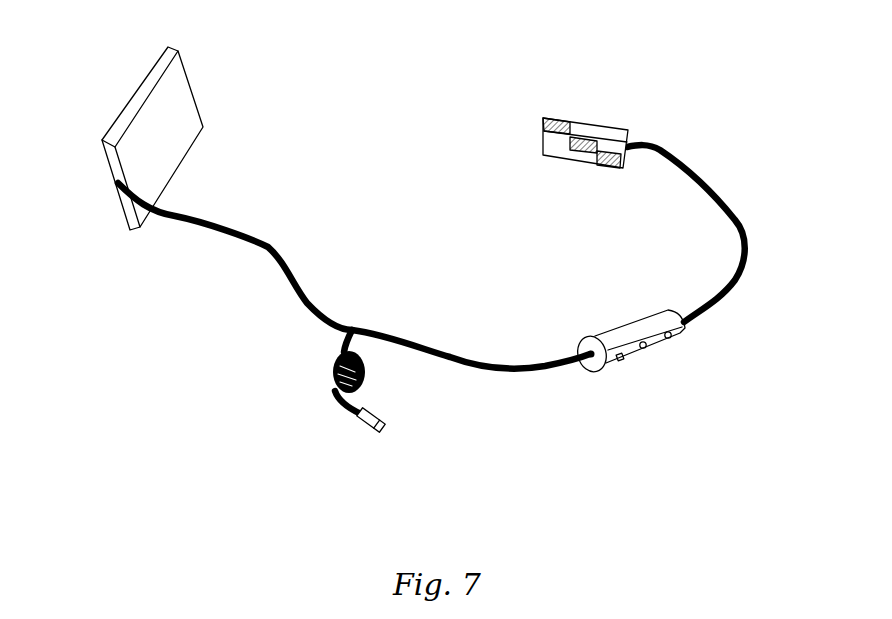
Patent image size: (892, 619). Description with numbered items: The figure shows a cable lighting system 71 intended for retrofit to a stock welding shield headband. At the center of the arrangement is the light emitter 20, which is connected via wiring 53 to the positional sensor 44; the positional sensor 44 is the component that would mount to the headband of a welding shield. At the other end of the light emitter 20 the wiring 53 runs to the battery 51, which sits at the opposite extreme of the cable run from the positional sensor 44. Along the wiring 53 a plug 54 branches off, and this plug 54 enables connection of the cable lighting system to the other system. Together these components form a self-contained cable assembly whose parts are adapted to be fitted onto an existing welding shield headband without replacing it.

The battery 51 is at (112, 117).
The wiring 53 is at (210, 222).
The plug 54 is at (385, 422).
The light emitter 20 is at (630, 362).
The positional sensor 44 is at (588, 123).
The cable lighting system 71 is at (729, 146).